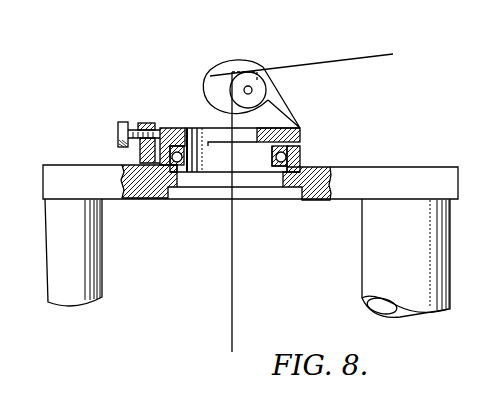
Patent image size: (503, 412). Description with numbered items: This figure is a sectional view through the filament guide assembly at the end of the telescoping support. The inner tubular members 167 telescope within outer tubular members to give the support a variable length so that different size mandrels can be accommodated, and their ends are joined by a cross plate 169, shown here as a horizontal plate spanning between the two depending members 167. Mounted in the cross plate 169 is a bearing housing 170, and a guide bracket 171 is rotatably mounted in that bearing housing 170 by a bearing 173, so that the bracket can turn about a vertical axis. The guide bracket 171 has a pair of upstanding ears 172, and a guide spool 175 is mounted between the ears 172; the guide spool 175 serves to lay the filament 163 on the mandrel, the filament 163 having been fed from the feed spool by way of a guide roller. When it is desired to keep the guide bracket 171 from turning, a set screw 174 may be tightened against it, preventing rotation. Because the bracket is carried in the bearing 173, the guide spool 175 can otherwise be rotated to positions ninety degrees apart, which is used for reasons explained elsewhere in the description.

The filament 163 is at (233, 235).
The inner tubular member 167 is at (362, 276).
The cross plate 169 is at (400, 167).
The bearing housing 170 is at (300, 161).
The guide bracket 171 is at (299, 135).
The upstanding ears 172 is at (288, 110).
The bearing 173 is at (184, 146).
The set screw 174 is at (136, 122).
The guide spool 175 is at (243, 62).